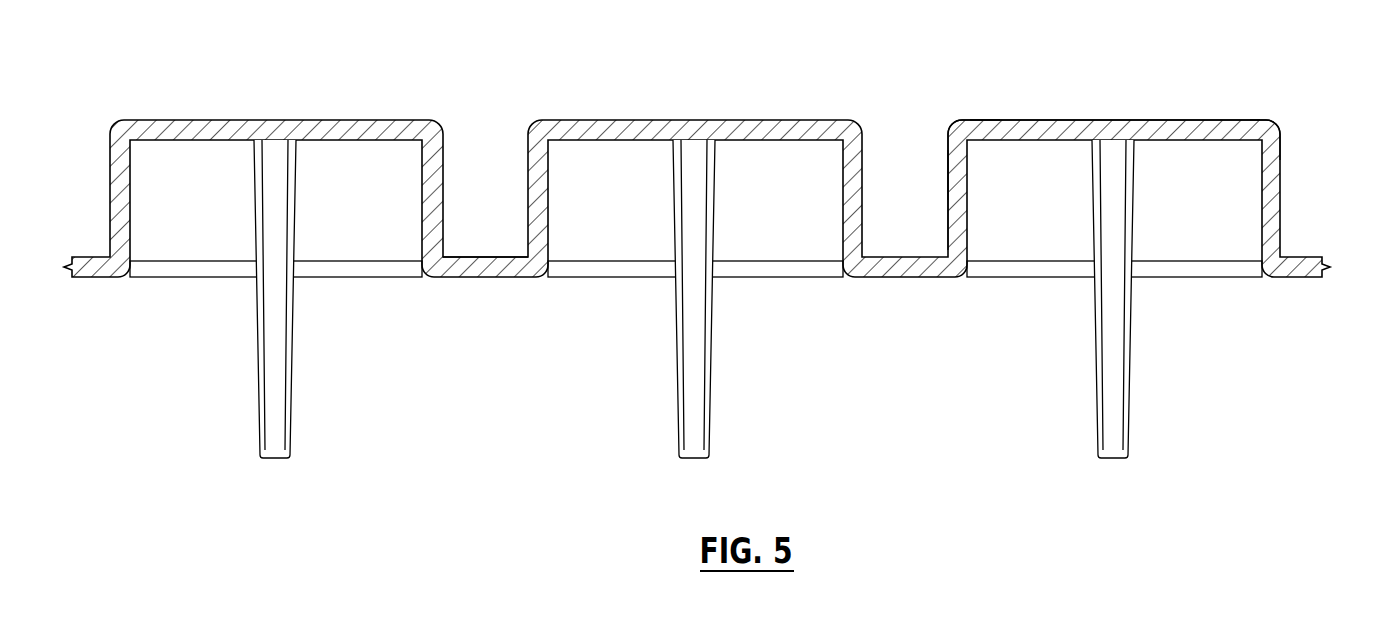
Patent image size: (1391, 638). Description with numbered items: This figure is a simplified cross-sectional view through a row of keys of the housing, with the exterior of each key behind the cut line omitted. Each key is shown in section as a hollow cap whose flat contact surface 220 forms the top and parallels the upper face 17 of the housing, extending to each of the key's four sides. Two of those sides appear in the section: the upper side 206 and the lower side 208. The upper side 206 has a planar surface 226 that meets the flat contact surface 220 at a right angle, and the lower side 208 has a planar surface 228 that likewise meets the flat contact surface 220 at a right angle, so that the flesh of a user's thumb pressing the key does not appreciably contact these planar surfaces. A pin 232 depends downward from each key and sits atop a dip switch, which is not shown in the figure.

The upper face 17 is at (490, 257).
The upper side 206 is at (1283, 195).
The lower side 208 is at (947, 143).
The flat contact surface 220 is at (1127, 110).
The planar surface 226 is at (1294, 144).
The planar surface 228 is at (936, 200).
The pin 232 is at (673, 338).